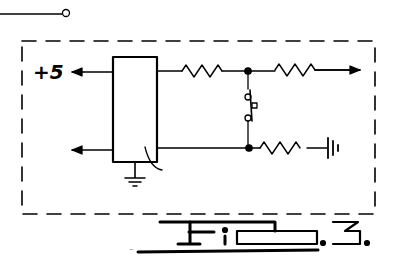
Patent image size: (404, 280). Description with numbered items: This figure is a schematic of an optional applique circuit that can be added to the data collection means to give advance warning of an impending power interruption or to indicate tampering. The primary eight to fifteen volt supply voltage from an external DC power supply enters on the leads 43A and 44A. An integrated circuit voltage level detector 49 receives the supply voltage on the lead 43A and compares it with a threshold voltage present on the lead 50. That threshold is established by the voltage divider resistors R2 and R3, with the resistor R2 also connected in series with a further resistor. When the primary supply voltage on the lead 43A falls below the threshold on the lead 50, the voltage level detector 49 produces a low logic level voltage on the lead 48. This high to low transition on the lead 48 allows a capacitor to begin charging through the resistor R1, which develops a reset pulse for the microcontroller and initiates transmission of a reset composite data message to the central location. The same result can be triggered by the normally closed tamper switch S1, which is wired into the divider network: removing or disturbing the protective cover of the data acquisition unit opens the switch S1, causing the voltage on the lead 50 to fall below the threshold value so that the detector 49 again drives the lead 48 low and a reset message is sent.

The lead 43A is at (331, 69).
The lead 44A is at (58, 15).
The lead 48 is at (100, 150).
The integrated circuit voltage level detector 49 is at (145, 57).
The lead 50 is at (186, 146).
The resistor R1 is at (195, 63).
The voltage divider resistor R2 is at (288, 62).
The voltage divider resistor R3 is at (272, 158).
The tamper switch S1 is at (258, 103).